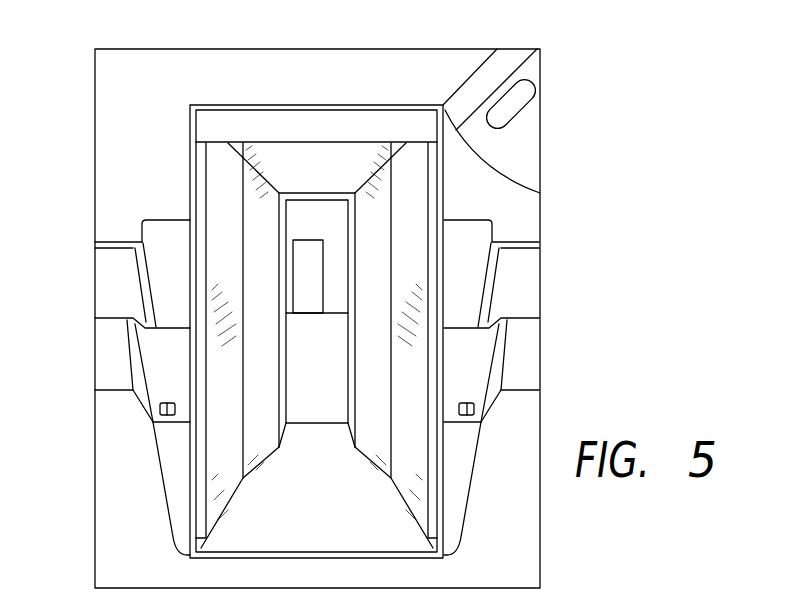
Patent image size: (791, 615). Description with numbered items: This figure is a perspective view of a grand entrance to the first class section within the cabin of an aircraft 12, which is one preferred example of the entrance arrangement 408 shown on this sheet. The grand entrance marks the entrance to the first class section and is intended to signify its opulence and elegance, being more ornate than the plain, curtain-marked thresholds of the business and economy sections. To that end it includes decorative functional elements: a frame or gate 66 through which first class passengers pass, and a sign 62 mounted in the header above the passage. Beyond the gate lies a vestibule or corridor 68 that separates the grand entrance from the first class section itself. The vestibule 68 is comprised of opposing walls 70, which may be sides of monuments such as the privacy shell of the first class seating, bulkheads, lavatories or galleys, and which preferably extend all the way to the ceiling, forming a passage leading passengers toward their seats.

The aircraft cabin entryway 408 is at (604, 316).
The frame or gate 66 is at (212, 123).
The sign 62 is at (360, 119).
The opposing walls 70 is at (208, 227).
The vestibule or corridor 68 is at (222, 427).
The aircraft 12 is at (333, 391).